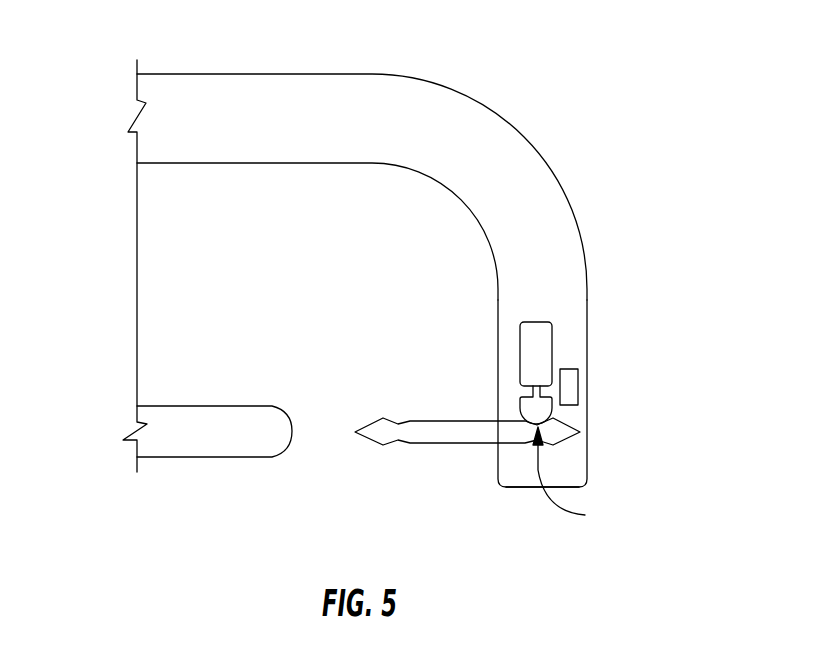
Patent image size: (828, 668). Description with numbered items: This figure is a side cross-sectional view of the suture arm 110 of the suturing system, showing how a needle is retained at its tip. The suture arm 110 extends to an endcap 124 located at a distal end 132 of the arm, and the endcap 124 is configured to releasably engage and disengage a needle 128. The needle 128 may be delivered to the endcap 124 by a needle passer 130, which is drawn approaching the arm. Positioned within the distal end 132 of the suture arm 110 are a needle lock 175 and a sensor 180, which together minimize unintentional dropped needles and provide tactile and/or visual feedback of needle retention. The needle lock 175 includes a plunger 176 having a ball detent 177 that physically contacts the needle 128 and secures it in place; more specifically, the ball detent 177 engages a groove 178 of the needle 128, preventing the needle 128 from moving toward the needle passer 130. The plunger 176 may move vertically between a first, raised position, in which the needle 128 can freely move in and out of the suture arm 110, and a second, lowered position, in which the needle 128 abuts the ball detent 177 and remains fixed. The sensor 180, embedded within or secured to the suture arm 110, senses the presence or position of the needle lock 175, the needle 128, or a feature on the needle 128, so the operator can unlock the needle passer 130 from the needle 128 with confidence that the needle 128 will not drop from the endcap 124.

The suture arm 110 is at (338, 48).
The endcap 124 is at (575, 467).
The needle 128 is at (427, 438).
The needle passer 130 is at (220, 440).
The distal end 132 is at (600, 483).
The needle lock 175 is at (544, 323).
The plunger 176 is at (546, 343).
The ball detent 177 is at (528, 408).
The groove 178 is at (578, 481).
The sensor 180 is at (566, 385).